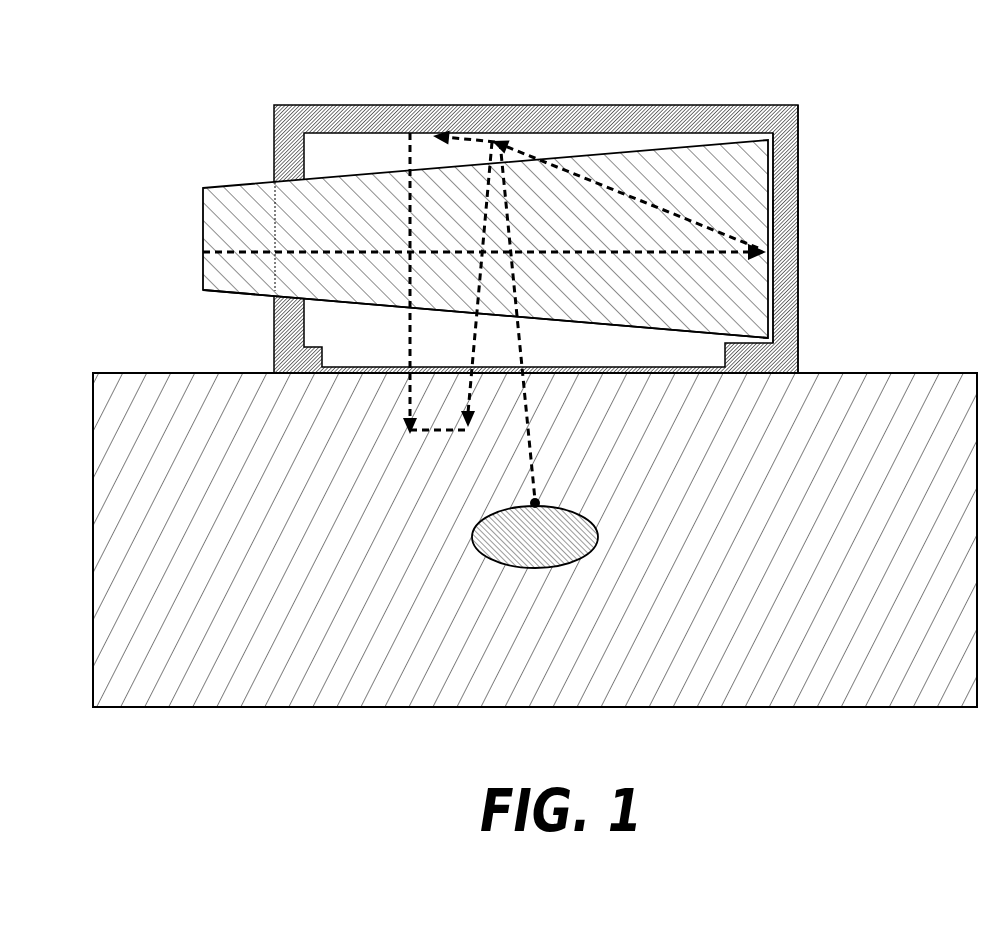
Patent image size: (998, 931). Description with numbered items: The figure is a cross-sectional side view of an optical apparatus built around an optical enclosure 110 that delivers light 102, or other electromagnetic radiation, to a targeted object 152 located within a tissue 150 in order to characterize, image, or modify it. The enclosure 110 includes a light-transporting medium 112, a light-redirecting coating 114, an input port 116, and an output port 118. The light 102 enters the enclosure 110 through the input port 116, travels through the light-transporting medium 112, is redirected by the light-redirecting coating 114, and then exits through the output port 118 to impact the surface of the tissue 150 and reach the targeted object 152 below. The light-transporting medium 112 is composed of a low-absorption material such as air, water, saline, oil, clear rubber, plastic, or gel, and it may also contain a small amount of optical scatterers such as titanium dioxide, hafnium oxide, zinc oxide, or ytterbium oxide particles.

The light 102 is at (242, 247).
The optical enclosure 110 is at (274, 108).
The light-transporting medium 112 is at (798, 177).
The light-redirecting coating 114 is at (798, 220).
The input port 116 is at (263, 282).
The output port 118 is at (662, 374).
The tissue 150 is at (885, 668).
The targeted object 152 is at (540, 550).